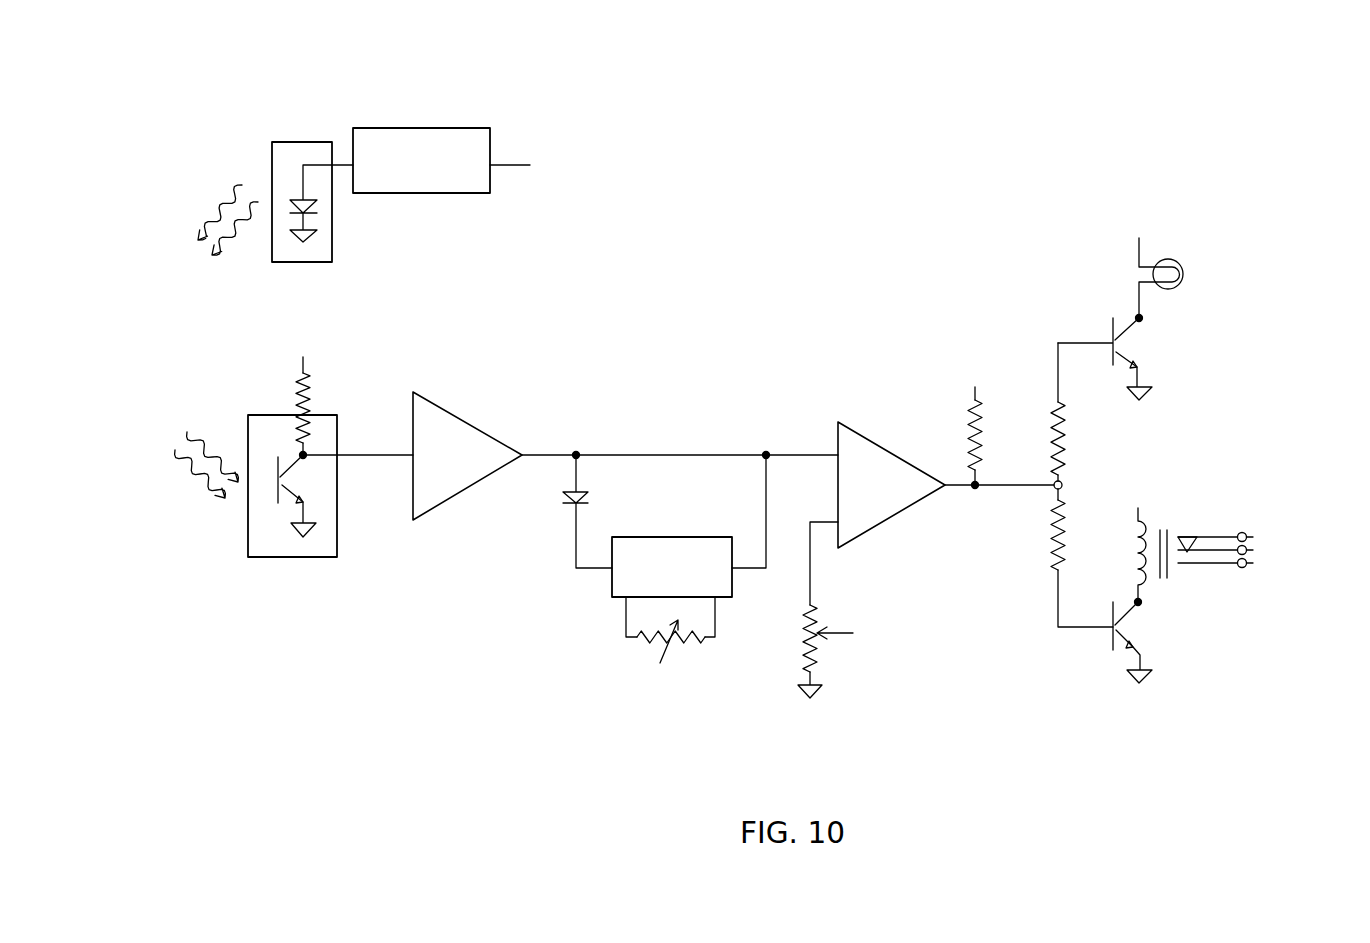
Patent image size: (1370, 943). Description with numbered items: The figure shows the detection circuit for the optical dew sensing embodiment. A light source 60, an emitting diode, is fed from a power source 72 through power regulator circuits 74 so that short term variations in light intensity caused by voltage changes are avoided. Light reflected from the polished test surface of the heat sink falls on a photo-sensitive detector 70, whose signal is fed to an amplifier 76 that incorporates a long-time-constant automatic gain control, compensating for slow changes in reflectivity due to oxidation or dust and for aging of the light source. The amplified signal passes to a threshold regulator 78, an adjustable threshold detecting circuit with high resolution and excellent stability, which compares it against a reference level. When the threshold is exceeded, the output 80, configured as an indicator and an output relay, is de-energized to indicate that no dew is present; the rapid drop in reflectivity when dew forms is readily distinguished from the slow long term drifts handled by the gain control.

The light source 60 is at (272, 167).
The photo-sensitive detector 70 is at (298, 557).
The power source 72 is at (567, 133).
The power regulator circuits 74 is at (410, 128).
The amplifier 76 is at (689, 316).
The threshold regulator 78 is at (908, 635).
The output 80 is at (1147, 186).